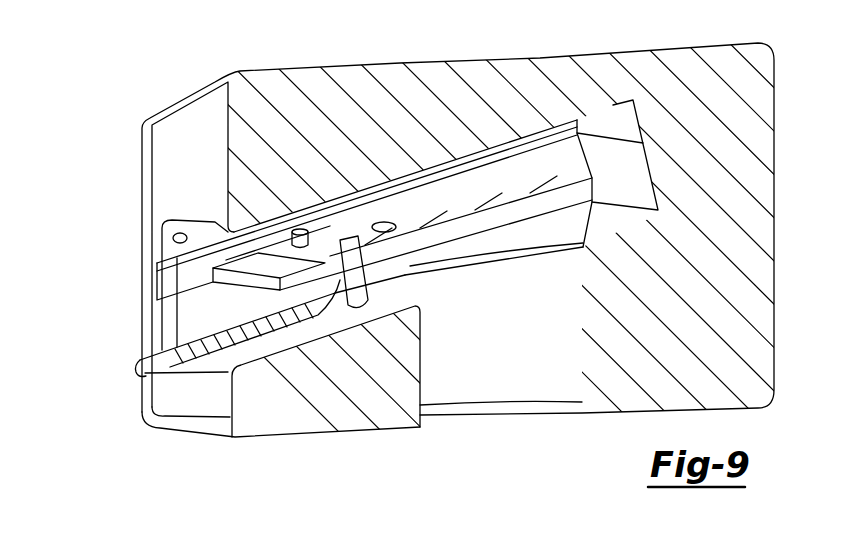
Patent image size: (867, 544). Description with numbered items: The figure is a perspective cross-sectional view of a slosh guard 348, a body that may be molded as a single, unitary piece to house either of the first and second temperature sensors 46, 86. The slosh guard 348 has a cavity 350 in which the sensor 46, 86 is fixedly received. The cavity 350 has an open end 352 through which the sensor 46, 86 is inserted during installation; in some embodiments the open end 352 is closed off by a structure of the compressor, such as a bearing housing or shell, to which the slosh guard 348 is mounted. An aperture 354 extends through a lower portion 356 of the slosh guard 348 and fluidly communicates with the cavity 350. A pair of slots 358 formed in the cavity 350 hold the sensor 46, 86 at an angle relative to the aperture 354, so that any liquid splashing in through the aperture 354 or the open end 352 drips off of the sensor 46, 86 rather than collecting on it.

The slosh guard 348 is at (746, 40).
The cavity 350 is at (648, 179).
The open end 352 is at (176, 240).
The aperture 354 is at (553, 400).
The lower portion 356 is at (353, 432).
The slots 358 is at (172, 284).
The first temperature sensor 46 is at (598, 150).
The second temperature sensor 86 is at (374, 203).